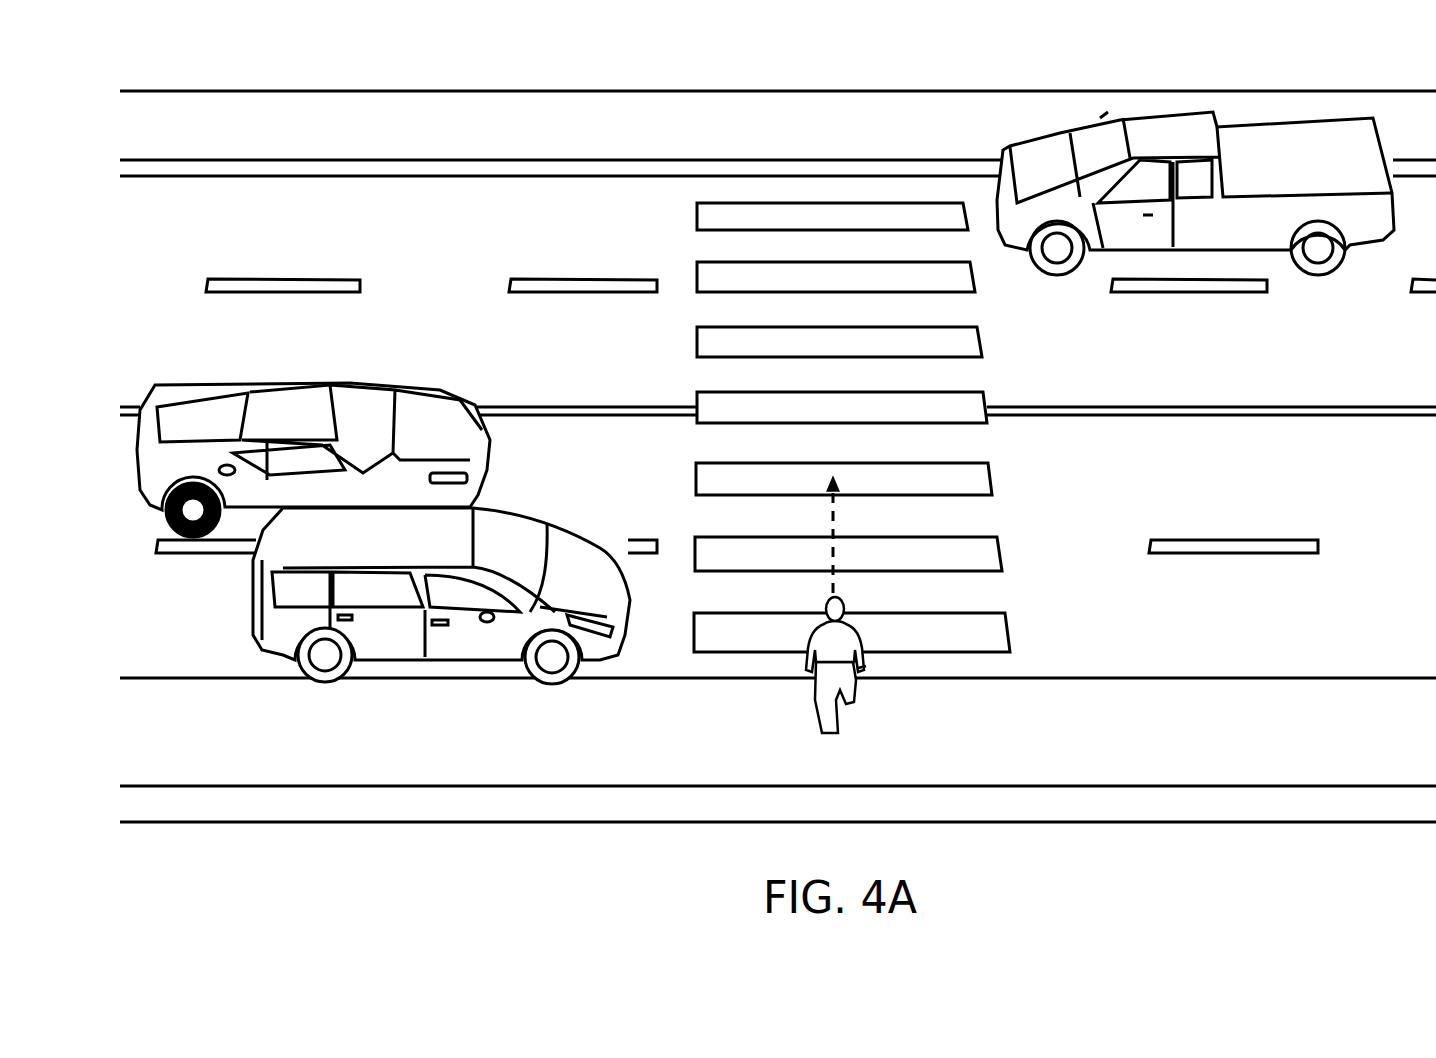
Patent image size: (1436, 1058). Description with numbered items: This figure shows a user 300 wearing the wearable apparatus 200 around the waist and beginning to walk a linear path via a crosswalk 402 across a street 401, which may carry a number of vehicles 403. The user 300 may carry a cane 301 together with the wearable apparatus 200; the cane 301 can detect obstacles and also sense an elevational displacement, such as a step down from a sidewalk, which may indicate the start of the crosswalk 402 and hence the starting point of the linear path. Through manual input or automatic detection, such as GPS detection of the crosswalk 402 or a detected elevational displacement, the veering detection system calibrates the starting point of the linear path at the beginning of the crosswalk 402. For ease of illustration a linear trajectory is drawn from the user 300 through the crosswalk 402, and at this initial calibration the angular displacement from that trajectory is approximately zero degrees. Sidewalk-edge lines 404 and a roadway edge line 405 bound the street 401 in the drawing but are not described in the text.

The wearable apparatus 200 is at (838, 675).
The user 300 is at (860, 600).
The cane 301 is at (877, 668).
The street 401 is at (426, 197).
The crosswalk 402 is at (992, 480).
The vehicles 403 is at (1175, 123).
The sidewalk curb lines 404 is at (982, 768).
The roadway edge line 405 is at (475, 120).